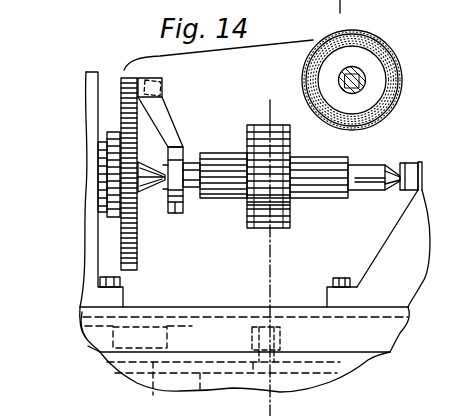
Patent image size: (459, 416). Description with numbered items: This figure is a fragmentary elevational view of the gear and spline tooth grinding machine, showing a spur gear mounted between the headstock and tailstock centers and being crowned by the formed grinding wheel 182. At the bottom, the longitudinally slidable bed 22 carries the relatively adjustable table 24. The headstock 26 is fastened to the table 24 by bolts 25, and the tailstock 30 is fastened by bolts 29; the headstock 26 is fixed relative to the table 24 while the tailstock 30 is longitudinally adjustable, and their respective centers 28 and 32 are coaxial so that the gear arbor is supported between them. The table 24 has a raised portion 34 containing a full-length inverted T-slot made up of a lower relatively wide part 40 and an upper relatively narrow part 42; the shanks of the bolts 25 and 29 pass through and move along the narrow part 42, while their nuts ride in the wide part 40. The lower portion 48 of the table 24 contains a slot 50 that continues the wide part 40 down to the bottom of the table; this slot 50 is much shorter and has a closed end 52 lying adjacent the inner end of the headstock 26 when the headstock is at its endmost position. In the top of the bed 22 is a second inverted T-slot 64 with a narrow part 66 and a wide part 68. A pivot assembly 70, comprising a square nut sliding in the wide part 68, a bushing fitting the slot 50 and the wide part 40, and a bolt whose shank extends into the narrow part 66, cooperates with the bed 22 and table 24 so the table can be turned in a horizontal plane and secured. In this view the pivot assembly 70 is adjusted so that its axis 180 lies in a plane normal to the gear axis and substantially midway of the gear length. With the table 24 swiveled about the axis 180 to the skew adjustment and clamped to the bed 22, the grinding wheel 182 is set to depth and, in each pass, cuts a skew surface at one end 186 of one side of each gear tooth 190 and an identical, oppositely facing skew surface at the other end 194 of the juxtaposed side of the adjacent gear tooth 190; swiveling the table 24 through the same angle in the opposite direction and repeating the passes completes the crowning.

The bed 22 is at (104, 376).
The table 24 is at (221, 304).
The bolts 25 is at (123, 280).
The headstock 26 is at (88, 180).
The center 28 is at (165, 181).
The bolts 29 is at (347, 277).
The tailstock 30 is at (393, 242).
The center 32 is at (421, 161).
The raised portion 34 is at (80, 309).
The lower relatively wide part 40 is at (98, 350).
The upper relatively narrow part 42 is at (297, 319).
The lower portion 48 is at (87, 340).
The slot 50 is at (160, 342).
The closed end 52 is at (167, 333).
The inverted T-slot 64 is at (324, 384).
The narrow part 66 is at (200, 393).
The wide part 68 is at (150, 392).
The pivot assembly 70 is at (278, 378).
The axis 180 is at (270, 108).
The formed grinding wheel 182 is at (402, 107).
The end 186 is at (291, 148).
The gear tooth 190 is at (252, 206).
The other end 194 is at (196, 157).